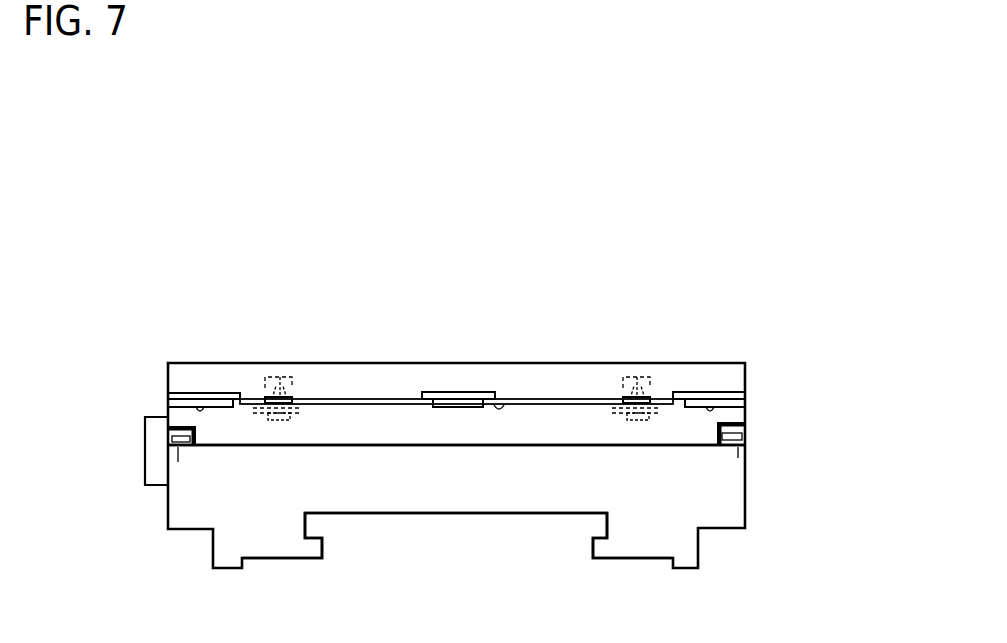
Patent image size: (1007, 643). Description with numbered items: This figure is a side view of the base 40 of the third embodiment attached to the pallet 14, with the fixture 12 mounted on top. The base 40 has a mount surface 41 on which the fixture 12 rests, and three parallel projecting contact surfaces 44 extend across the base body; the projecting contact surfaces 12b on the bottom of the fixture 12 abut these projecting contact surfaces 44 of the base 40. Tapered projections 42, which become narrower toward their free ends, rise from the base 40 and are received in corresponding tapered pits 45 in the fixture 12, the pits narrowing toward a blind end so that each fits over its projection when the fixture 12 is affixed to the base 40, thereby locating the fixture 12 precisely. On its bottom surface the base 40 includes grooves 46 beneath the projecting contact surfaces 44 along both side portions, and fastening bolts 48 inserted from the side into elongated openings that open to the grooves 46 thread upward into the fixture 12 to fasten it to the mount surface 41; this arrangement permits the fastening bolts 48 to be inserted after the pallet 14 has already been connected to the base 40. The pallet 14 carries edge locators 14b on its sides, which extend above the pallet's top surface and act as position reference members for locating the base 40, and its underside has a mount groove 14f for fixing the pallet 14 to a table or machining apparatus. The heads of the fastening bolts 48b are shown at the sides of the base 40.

The fixture 12 is at (541, 360).
The projecting contact surfaces 12b is at (200, 399).
The pallet 14 is at (486, 516).
The edge locators 14b is at (143, 476).
The mount groove 14f is at (322, 548).
The base 40 is at (548, 447).
The mount surface 41 is at (388, 399).
The tapered projections 42 is at (282, 377).
The projecting contact surfaces 44 is at (452, 407).
The tapered pits 45 is at (292, 377).
The grooves 46 is at (190, 446).
The fastening bolts 48 is at (167, 438).
The holder flange 48b is at (178, 460).